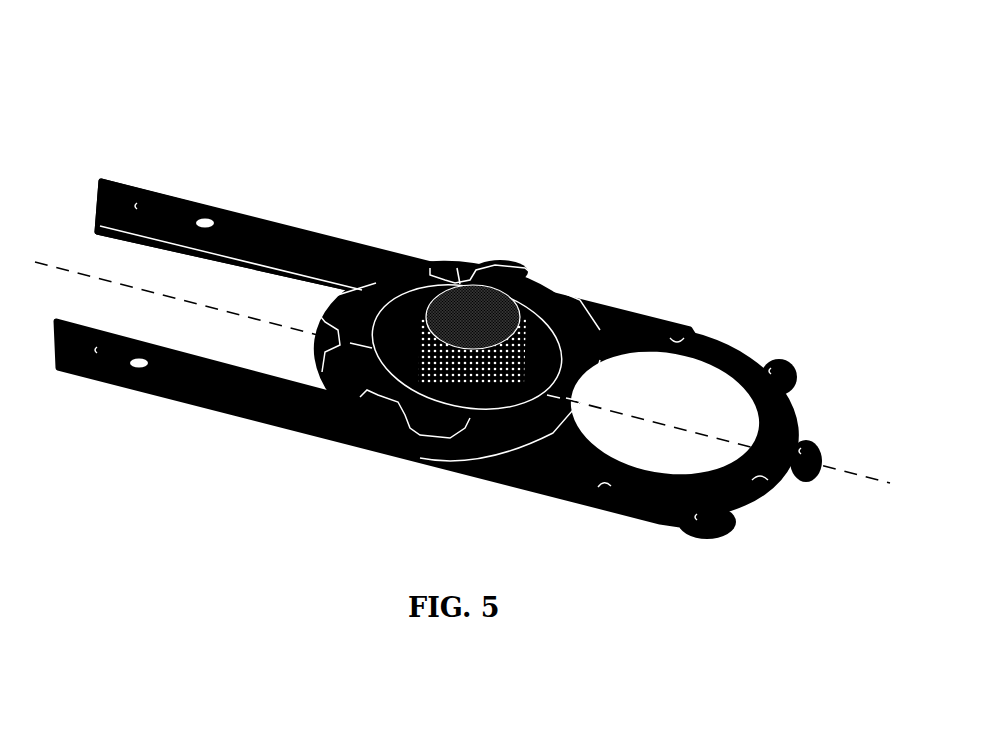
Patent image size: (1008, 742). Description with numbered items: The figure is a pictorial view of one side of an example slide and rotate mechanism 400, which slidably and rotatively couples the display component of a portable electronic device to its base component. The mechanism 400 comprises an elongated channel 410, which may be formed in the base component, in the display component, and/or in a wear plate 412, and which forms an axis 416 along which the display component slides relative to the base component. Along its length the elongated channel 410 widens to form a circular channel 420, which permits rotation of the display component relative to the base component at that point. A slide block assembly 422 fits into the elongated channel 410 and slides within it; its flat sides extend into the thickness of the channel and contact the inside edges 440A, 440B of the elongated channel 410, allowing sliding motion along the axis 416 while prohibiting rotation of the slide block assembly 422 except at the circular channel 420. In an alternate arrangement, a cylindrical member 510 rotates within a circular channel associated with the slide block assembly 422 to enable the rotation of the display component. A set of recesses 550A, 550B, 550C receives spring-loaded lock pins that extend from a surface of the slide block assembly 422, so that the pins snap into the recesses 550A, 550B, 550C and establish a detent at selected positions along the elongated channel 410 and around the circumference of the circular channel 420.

The slide and rotate mechanism 400 is at (462, 287).
The elongated channel 410 is at (158, 264).
The wear plate 412 is at (162, 196).
The axis 416 is at (872, 487).
The circular channel 420 is at (704, 392).
The slide block assembly 422 is at (598, 380).
The inside edge 440A is at (217, 354).
The inside edge 440B is at (295, 282).
The cylindrical member 510 is at (457, 268).
The recess 550A is at (672, 331).
The recess 550B is at (758, 483).
The recess 550C is at (600, 481).